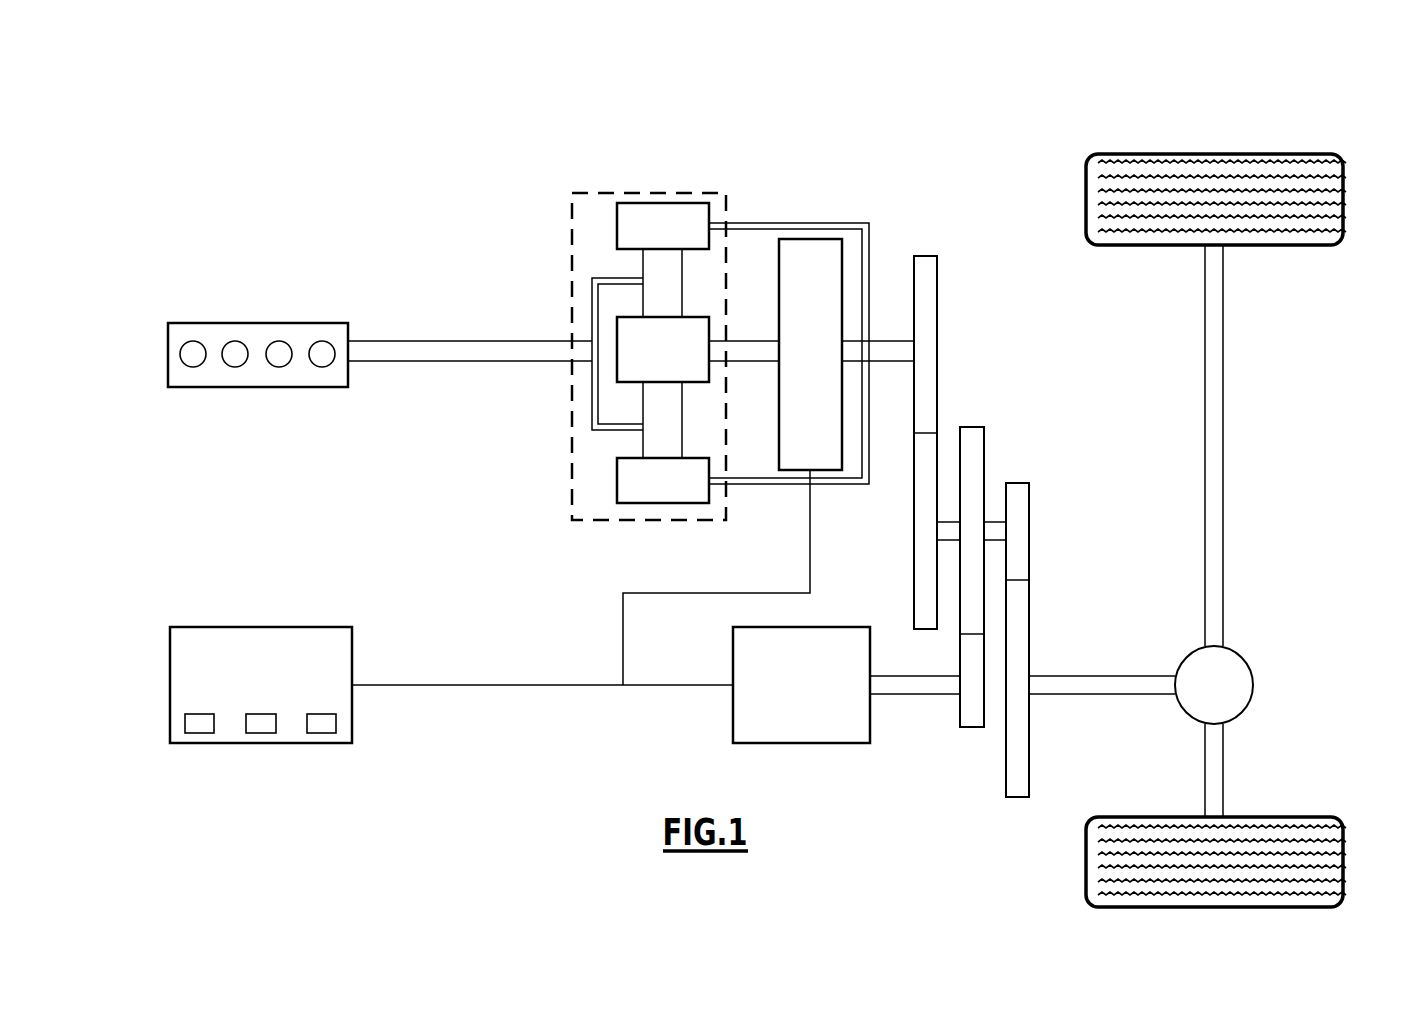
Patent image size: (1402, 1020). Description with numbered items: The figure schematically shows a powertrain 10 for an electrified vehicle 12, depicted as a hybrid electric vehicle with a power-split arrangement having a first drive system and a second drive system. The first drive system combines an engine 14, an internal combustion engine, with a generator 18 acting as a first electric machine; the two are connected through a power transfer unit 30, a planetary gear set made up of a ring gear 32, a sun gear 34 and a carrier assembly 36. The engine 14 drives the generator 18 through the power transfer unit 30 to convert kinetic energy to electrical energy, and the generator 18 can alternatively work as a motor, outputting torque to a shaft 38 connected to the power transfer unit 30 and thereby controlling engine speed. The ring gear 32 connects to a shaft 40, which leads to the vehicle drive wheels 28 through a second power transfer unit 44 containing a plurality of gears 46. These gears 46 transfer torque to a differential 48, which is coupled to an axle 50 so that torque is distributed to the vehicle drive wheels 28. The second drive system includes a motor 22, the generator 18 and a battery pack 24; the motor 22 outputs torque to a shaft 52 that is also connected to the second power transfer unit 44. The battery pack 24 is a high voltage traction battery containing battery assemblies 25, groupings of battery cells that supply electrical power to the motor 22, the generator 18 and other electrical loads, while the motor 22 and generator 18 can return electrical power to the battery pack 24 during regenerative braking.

The powertrain 10 is at (408, 218).
The electrified vehicle 12 is at (840, 144).
The engine 14 is at (183, 322).
The generator 18 is at (787, 239).
The motor 22 is at (870, 725).
The battery pack 24 is at (188, 627).
The battery assemblies 25 is at (214, 724).
The vehicle drive wheels 28 is at (1343, 860).
The power transfer unit 30 is at (572, 486).
The ring gear 32 is at (617, 222).
The sun gear 34 is at (617, 328).
The carrier assembly 36 is at (592, 418).
The shaft 38 is at (745, 341).
The shaft 40 is at (890, 341).
The second power transfer unit 44 is at (1010, 388).
The gears 46 is at (937, 394).
The differential 48 is at (1248, 706).
The axle 50 is at (1223, 436).
The shaft 52 is at (925, 694).